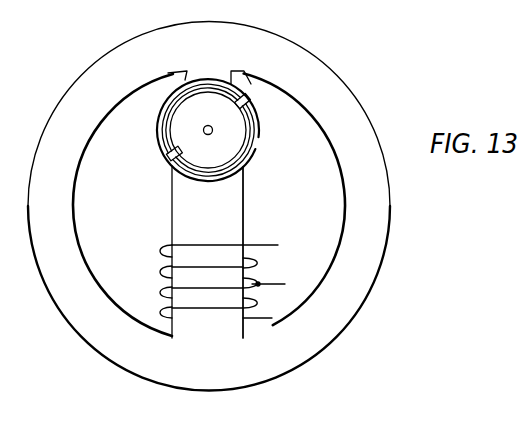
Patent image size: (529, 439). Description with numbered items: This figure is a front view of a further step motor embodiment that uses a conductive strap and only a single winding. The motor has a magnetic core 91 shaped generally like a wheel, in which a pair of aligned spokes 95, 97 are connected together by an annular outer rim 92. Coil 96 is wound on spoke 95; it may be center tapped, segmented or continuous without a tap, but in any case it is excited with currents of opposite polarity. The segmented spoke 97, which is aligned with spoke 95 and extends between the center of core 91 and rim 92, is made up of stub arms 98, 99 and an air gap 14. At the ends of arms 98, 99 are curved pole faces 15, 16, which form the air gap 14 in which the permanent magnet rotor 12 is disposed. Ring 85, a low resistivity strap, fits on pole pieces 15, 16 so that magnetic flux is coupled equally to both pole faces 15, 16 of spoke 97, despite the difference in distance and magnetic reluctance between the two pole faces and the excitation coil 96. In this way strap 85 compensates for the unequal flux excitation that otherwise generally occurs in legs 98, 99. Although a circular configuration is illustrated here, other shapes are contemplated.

The magnetic core 91 is at (212, 380).
The annular outer rim 92 is at (112, 353).
The stub arm 98 is at (240, 182).
The stub arm 99 is at (185, 72).
The ring 85 is at (246, 88).
The permanent magnet rotor 12 is at (225, 118).
The air gap 14 is at (251, 147).
The segmented spoke 97 is at (272, 149).
The curved pole face 16 is at (248, 99).
The curved pole face 15 is at (176, 144).
The spoke 95 is at (172, 243).
The coil 96 is at (278, 245).